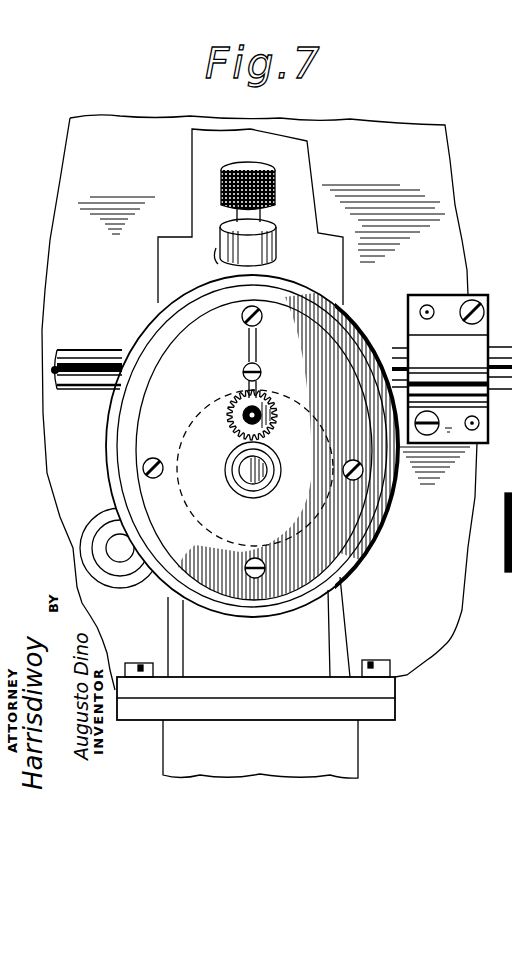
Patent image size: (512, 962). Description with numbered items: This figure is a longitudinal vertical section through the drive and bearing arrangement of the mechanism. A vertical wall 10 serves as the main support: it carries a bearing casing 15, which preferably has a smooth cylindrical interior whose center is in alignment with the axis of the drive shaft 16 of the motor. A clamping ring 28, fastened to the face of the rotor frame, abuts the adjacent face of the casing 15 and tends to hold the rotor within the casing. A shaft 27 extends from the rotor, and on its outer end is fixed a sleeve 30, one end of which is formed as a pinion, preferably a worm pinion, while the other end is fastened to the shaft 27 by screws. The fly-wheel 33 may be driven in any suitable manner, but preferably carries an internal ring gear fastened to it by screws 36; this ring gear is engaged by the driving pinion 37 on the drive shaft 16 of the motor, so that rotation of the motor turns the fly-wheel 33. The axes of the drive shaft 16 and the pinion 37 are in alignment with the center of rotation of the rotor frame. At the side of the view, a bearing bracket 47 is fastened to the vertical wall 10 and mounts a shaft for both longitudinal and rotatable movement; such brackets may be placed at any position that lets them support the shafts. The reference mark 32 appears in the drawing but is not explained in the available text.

The wall 10 is at (259, 446).
The bearing casing 15 is at (312, 297).
The drive shaft 16 is at (240, 425).
The shaft 27 is at (253, 485).
The clamping ring 28 is at (168, 336).
The sleeve 30 is at (268, 472).
The hub 32 is at (271, 483).
The fly-wheel 33 is at (299, 334).
The screws 36 is at (156, 458).
The driving pinion 37 is at (245, 428).
The bearing bracket 47 is at (448, 369).